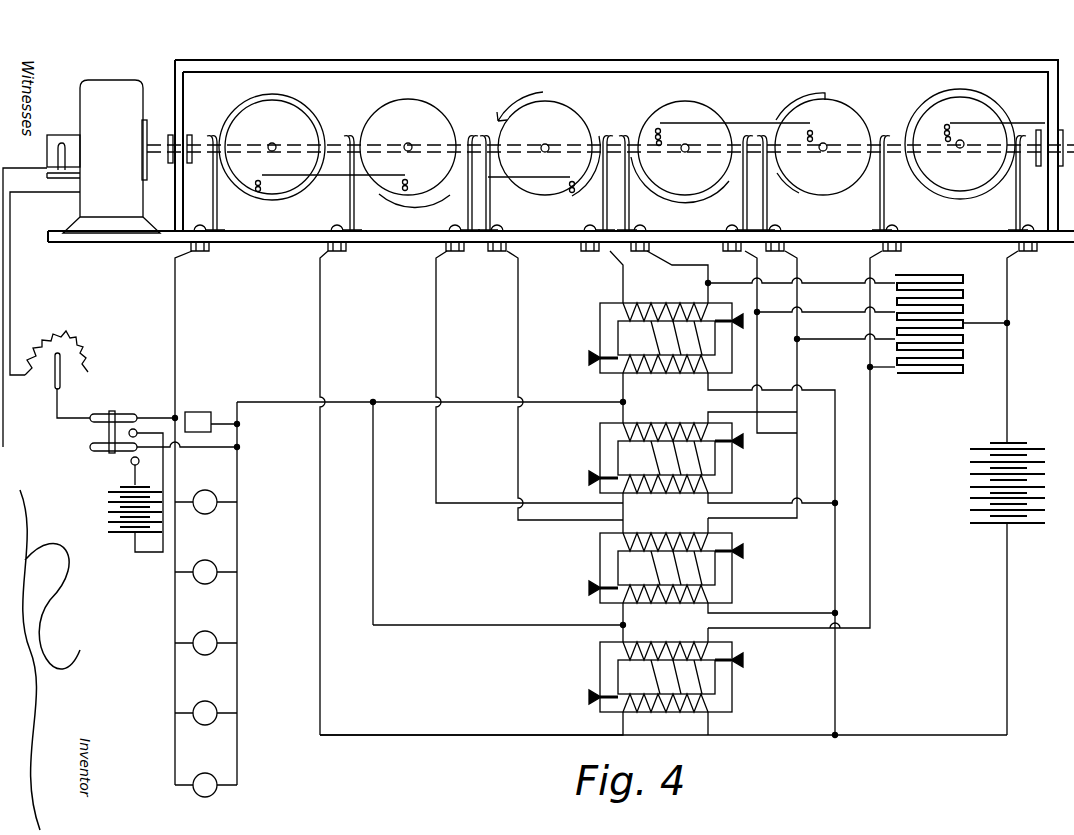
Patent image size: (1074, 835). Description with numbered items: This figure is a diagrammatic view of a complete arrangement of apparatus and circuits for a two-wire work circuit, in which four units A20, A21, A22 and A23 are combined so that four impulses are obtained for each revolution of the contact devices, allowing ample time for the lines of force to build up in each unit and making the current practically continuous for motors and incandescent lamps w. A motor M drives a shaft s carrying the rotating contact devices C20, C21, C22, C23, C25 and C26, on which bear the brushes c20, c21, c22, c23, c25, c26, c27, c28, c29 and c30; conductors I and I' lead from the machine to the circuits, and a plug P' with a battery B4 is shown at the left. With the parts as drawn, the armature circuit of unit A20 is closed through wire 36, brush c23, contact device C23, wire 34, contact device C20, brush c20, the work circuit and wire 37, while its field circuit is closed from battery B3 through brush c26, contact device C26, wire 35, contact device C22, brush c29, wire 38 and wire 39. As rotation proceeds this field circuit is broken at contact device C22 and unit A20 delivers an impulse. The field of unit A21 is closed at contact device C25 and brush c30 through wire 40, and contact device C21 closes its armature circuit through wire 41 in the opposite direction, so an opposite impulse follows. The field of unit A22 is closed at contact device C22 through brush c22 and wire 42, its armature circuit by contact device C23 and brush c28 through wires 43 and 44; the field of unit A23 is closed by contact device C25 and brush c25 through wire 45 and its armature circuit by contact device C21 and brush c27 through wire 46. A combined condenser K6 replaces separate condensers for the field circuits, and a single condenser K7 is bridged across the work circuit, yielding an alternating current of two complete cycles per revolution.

The motor M is at (104, 82).
The shaft s is at (155, 142).
The contact device C20 is at (280, 138).
The contact device C21 is at (412, 142).
The contact device C22 is at (681, 138).
The contact device C23 is at (552, 136).
The contact device C25 is at (825, 134).
The contact device C26 is at (965, 135).
The brush c20 is at (223, 183).
The brush c21 is at (456, 183).
The brush c22 is at (741, 212).
The brush c23 is at (600, 218).
The brush c25 is at (878, 212).
The brush c26 is at (1014, 213).
The brush c27 is at (362, 183).
The brush c28 is at (498, 183).
The brush c29 is at (637, 183).
The brush c30 is at (776, 183).
The wire 34 is at (325, 183).
The wire 35 is at (740, 122).
The conductor I is at (226, 486).
The conductor I' is at (365, 492).
The wire 36 is at (622, 280).
The wire 37 is at (385, 390).
The wire 38 is at (706, 283).
The wire 39 is at (915, 733).
The wire 40 is at (808, 385).
The wire 41 is at (436, 472).
The wire 42 is at (757, 386).
The wire 43 is at (516, 330).
The wire 44 is at (442, 623).
The wire 45 is at (872, 455).
The wire 46 is at (318, 548).
The unit A20 is at (598, 330).
The unit A21 is at (598, 452).
The unit A22 is at (598, 562).
The unit A23 is at (598, 670).
The combined condenser K6 is at (859, 341).
The condenser K7 is at (206, 578).
The plug switch P' is at (147, 466).
The battery B3 is at (982, 493).
The battery B4 is at (116, 498).
The lamp w is at (218, 470).